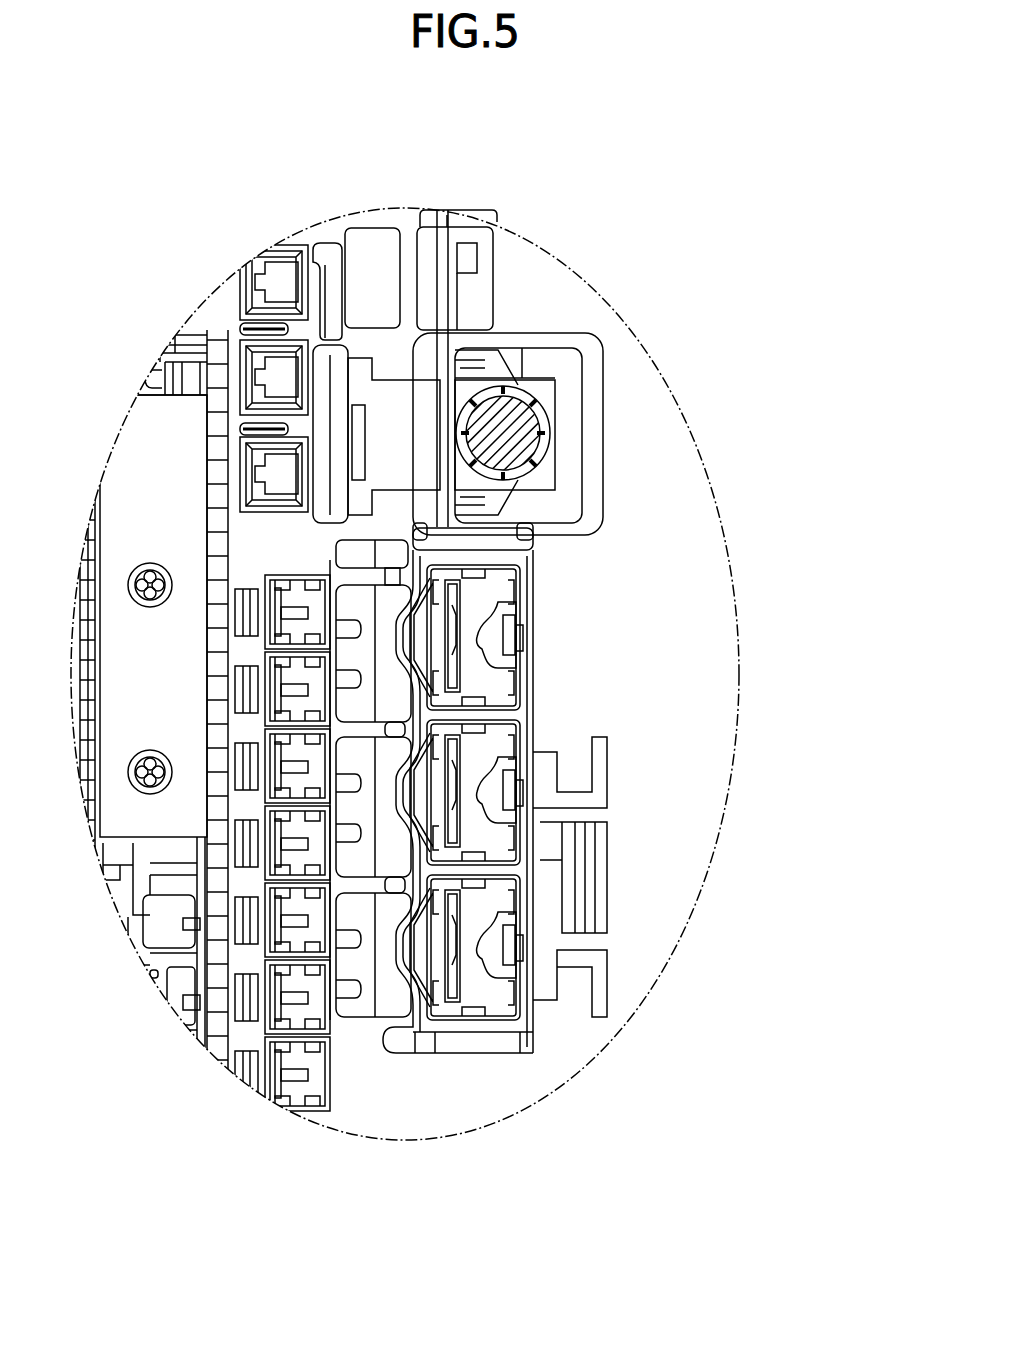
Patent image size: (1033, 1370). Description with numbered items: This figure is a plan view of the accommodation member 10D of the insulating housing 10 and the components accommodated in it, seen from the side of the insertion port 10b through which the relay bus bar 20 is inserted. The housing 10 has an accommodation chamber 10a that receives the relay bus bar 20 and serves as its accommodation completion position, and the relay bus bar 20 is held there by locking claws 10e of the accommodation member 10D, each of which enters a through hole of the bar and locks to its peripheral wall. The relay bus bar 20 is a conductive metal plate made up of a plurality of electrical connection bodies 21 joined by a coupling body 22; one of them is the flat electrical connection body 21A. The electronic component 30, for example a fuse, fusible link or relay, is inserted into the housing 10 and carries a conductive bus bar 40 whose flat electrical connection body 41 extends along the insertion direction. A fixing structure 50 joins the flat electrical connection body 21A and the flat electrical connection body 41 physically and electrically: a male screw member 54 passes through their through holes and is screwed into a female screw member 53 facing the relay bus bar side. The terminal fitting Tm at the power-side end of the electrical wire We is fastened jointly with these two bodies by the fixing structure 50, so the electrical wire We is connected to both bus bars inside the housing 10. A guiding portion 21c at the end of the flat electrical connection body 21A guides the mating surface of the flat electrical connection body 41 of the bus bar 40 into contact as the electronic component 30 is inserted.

The housing 10 is at (450, 691).
The accommodation member 10D is at (450, 691).
The accommodation chamber 10a is at (563, 270).
The insertion port 10b is at (462, 318).
The locking claw 10e is at (187, 352).
The relay bus bar 20 is at (426, 430).
The electrical connection bodies 21 is at (394, 312).
The flat electrical connection body 21A is at (403, 387).
The guiding portion 21c is at (478, 372).
The coupling body 22 is at (440, 312).
The electronic component 30 is at (485, 943).
The bus bar 40 is at (593, 422).
The flat electrical connection body 41 is at (500, 362).
The fixing structure 50 is at (550, 316).
The female screw member 53 is at (327, 262).
The male screw member 54 is at (555, 408).
The electrical wire We is at (528, 447).
The terminal fitting Tm is at (490, 496).